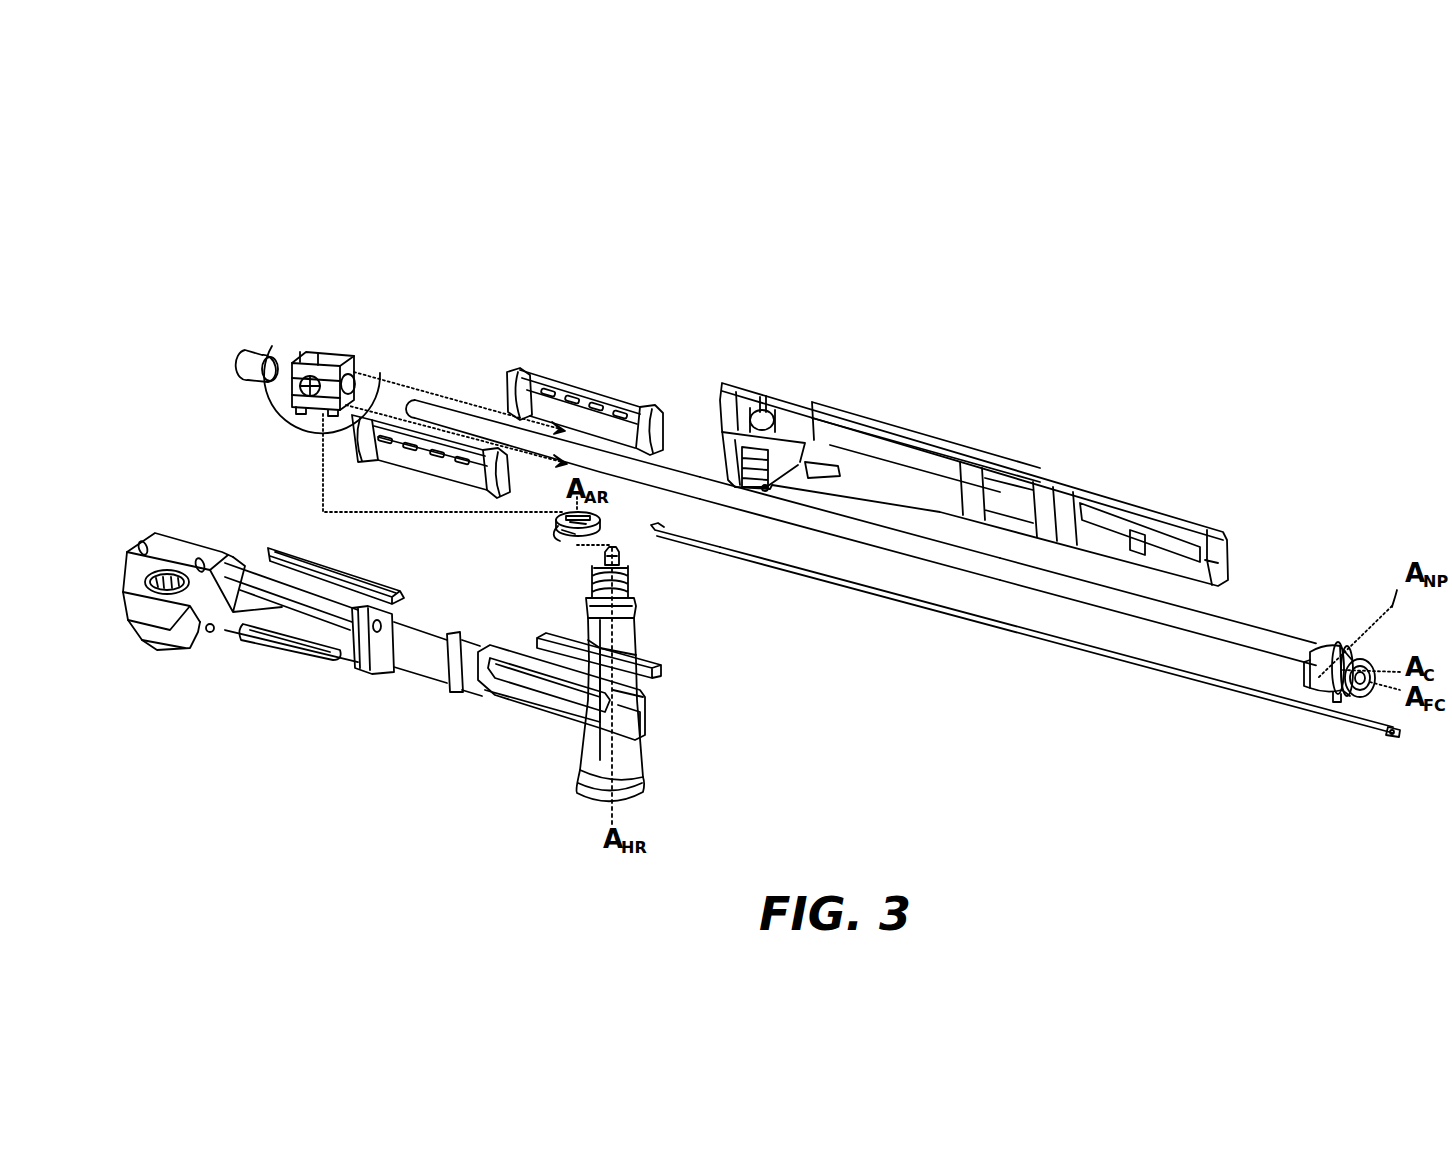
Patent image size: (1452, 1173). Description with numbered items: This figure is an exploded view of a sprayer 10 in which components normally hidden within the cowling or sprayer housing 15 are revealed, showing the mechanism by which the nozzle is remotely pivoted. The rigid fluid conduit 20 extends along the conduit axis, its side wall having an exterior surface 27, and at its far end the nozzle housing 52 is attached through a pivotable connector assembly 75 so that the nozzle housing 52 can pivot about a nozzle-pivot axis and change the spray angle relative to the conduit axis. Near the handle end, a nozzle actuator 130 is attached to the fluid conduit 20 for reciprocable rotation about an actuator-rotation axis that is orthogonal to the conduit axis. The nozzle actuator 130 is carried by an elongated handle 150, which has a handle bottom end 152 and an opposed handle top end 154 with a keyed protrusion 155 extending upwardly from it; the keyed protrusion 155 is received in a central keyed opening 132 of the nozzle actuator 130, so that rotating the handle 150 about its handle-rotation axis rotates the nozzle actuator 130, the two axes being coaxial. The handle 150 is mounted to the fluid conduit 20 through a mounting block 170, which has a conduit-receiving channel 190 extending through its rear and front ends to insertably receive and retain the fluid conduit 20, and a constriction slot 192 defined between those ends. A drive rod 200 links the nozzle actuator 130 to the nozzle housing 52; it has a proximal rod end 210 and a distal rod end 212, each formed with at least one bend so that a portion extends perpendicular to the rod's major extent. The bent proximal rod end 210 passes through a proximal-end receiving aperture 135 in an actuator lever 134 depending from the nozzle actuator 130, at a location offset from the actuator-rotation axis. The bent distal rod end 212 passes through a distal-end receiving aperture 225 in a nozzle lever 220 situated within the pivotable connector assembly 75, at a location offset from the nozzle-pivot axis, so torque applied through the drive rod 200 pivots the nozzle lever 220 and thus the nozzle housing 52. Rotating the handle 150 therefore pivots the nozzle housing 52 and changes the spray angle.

The sprayer 10 is at (415, 400).
The sprayer housing 15 is at (815, 402).
The fluid conduit 20 is at (1225, 628).
The exterior surface 27 is at (690, 487).
The nozzle housing 52 is at (1365, 657).
The pivotable connector assembly 75 is at (1349, 650).
The nozzle actuator 130 is at (592, 522).
The central keyed opening 132 is at (570, 517).
The actuator lever 134 is at (562, 534).
The proximal-end receiving aperture 135 is at (558, 540).
The handle 150 is at (632, 640).
The handle bottom end 152 is at (600, 789).
The handle top end 154 is at (632, 564).
The keyed protrusion 155 is at (622, 552).
The mounting block 170 is at (328, 362).
The conduit-receiving channel 190 is at (373, 375).
The constriction slot 192 is at (343, 360).
The drive rod 200 is at (1017, 626).
The proximal rod end 210 is at (664, 536).
The distal rod end 212 is at (1380, 732).
The nozzle lever 220 is at (1322, 693).
The distal-end receiving aperture 225 is at (1331, 697).